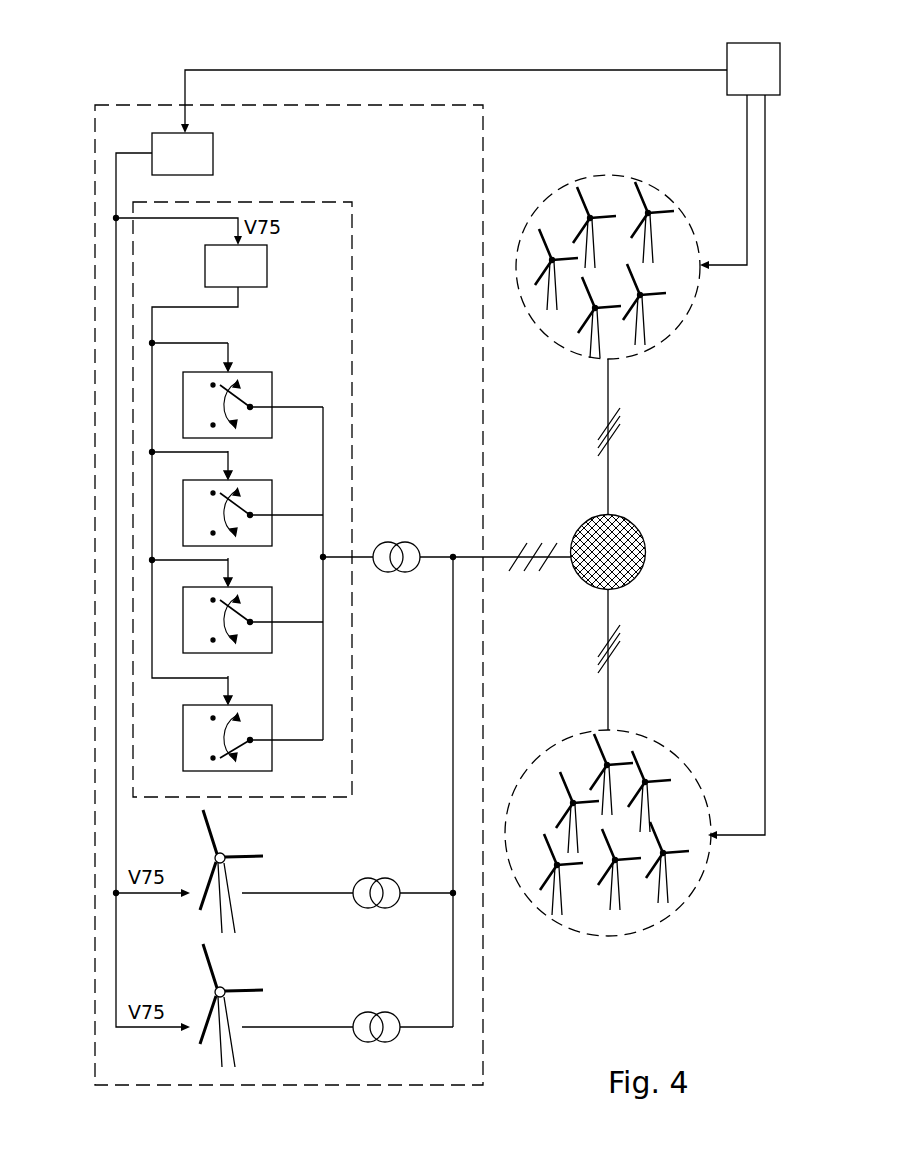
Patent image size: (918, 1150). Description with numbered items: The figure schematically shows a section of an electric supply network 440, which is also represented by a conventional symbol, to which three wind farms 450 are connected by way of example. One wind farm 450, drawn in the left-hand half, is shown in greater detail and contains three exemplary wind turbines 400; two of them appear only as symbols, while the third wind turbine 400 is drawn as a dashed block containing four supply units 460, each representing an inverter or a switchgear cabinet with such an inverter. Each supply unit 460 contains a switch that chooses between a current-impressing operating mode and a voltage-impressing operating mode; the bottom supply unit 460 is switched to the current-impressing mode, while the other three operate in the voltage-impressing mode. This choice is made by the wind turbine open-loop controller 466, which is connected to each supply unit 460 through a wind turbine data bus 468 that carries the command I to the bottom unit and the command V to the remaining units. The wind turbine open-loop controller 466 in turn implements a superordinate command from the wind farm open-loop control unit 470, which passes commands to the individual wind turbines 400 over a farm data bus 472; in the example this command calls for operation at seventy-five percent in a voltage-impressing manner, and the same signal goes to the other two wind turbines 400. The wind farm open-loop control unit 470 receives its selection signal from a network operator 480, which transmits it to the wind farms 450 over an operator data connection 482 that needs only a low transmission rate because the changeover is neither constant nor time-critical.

The wind turbine 400 is at (354, 196).
The electric supply network 440 is at (629, 518).
The wind farm 450 is at (102, 92).
The supply unit 460 is at (254, 380).
The wind turbine open-loop controller 466 is at (267, 272).
The wind turbine data bus 468 is at (190, 305).
The wind farm open-loop control unit 470 is at (213, 158).
The farm data bus 472 is at (116, 438).
The network operator 480 is at (725, 62).
The operator data connection 482 is at (523, 70).